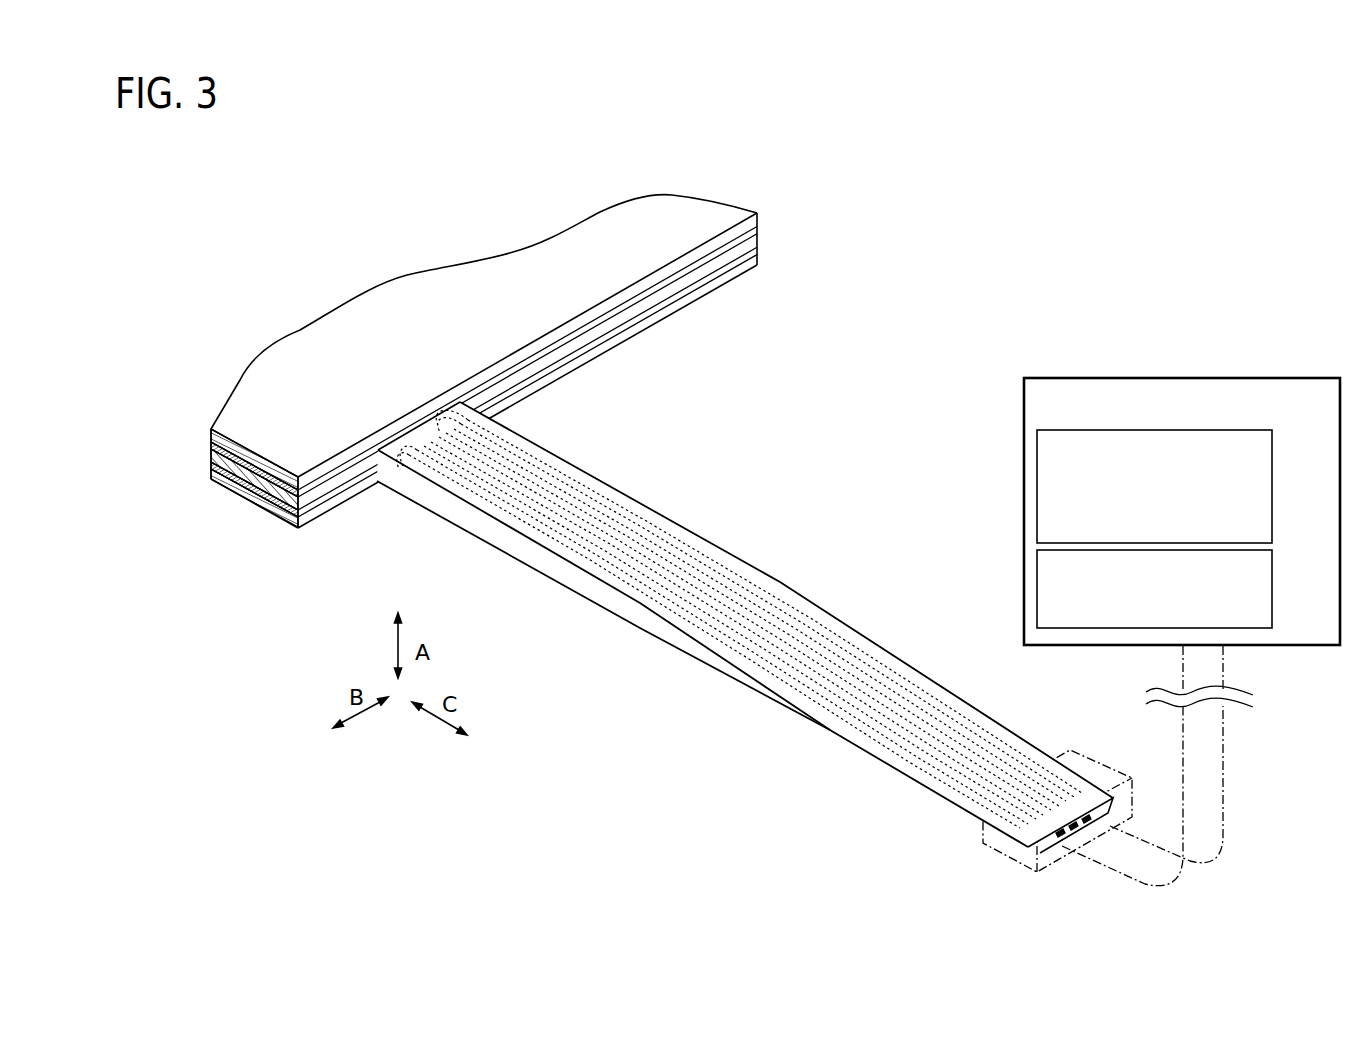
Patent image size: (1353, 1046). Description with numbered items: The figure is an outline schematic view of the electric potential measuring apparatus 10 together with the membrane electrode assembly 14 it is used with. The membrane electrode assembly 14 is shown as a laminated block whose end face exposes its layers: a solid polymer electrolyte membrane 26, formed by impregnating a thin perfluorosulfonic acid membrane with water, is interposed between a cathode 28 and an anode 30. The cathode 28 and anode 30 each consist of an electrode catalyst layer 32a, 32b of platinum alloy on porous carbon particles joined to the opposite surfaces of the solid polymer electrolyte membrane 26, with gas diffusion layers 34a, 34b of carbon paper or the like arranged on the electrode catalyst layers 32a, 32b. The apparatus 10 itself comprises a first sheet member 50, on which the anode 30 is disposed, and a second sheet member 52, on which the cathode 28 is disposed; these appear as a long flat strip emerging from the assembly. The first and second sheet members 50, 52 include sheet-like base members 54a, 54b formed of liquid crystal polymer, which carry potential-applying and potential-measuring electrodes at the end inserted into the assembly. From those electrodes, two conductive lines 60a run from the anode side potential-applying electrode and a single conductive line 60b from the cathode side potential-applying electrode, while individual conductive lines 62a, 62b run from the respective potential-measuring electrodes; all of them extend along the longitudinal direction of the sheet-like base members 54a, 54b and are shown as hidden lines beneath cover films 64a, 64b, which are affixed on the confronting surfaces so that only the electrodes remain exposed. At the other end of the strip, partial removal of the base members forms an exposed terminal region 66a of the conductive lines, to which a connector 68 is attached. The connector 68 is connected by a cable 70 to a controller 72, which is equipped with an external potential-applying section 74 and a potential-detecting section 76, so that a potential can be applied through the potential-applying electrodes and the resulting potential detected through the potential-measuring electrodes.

The electric potential measuring apparatus 10 is at (921, 282).
The membrane electrode assembly 14 is at (672, 230).
The solid polymer electrolyte membrane 26 is at (211, 487).
The cathode 28 is at (195, 494).
The anode 30 is at (195, 452).
The electrode catalyst layer 32a is at (212, 466).
The electrode catalyst layer 32b is at (212, 444).
The gas diffusion layer 34a is at (223, 487).
The gas diffusion layer 34b is at (212, 432).
The first sheet member 50 is at (743, 624).
The second sheet member 52 is at (733, 686).
The sheet-like base member 54a is at (875, 646).
The sheet-like base member 54b is at (599, 610).
The conductive lines 60a is at (640, 560).
The conductive line 60b is at (577, 520).
The conductive line 62a is at (654, 525).
The conductive line 62b is at (580, 547).
The cover film 64a is at (503, 448).
The cover film 64b is at (403, 470).
The terminal region 66a is at (1087, 808).
The connector 68 is at (1068, 752).
The cable 70 is at (1145, 843).
The controller 72 is at (1182, 487).
The external potential-applying section 74 is at (1273, 447).
The potential-detecting section 76 is at (1273, 563).